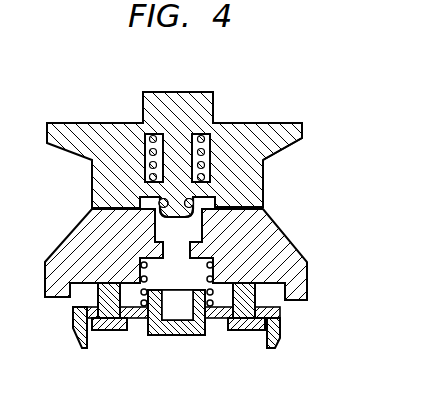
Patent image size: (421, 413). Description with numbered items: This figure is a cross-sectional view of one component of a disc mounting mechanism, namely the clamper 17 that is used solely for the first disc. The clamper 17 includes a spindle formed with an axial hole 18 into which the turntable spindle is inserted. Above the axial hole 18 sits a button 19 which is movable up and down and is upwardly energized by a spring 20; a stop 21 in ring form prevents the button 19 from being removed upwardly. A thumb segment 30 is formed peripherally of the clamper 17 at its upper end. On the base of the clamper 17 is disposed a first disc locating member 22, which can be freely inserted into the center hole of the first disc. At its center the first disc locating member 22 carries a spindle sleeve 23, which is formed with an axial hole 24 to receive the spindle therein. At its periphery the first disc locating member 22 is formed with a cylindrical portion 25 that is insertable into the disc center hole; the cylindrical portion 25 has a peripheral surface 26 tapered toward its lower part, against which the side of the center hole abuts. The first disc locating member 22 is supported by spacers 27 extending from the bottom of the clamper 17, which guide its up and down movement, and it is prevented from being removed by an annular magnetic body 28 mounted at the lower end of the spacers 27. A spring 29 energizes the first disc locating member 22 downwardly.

The clamper 17 is at (282, 123).
The axial hole 18 is at (184, 247).
The button 19 is at (178, 96).
The spring 20 is at (204, 137).
The stop 21 is at (194, 203).
The first disc locating member 22 is at (79, 343).
The spindle sleeve 23 is at (153, 338).
The axial hole 24 is at (180, 306).
The cylindrical portion 25 is at (281, 315).
The peripheral surface 26 is at (276, 334).
The spacers 27 is at (97, 297).
The annular magnetic body 28 is at (110, 332).
The spring 29 is at (216, 296).
The thumb segment 30 is at (303, 136).